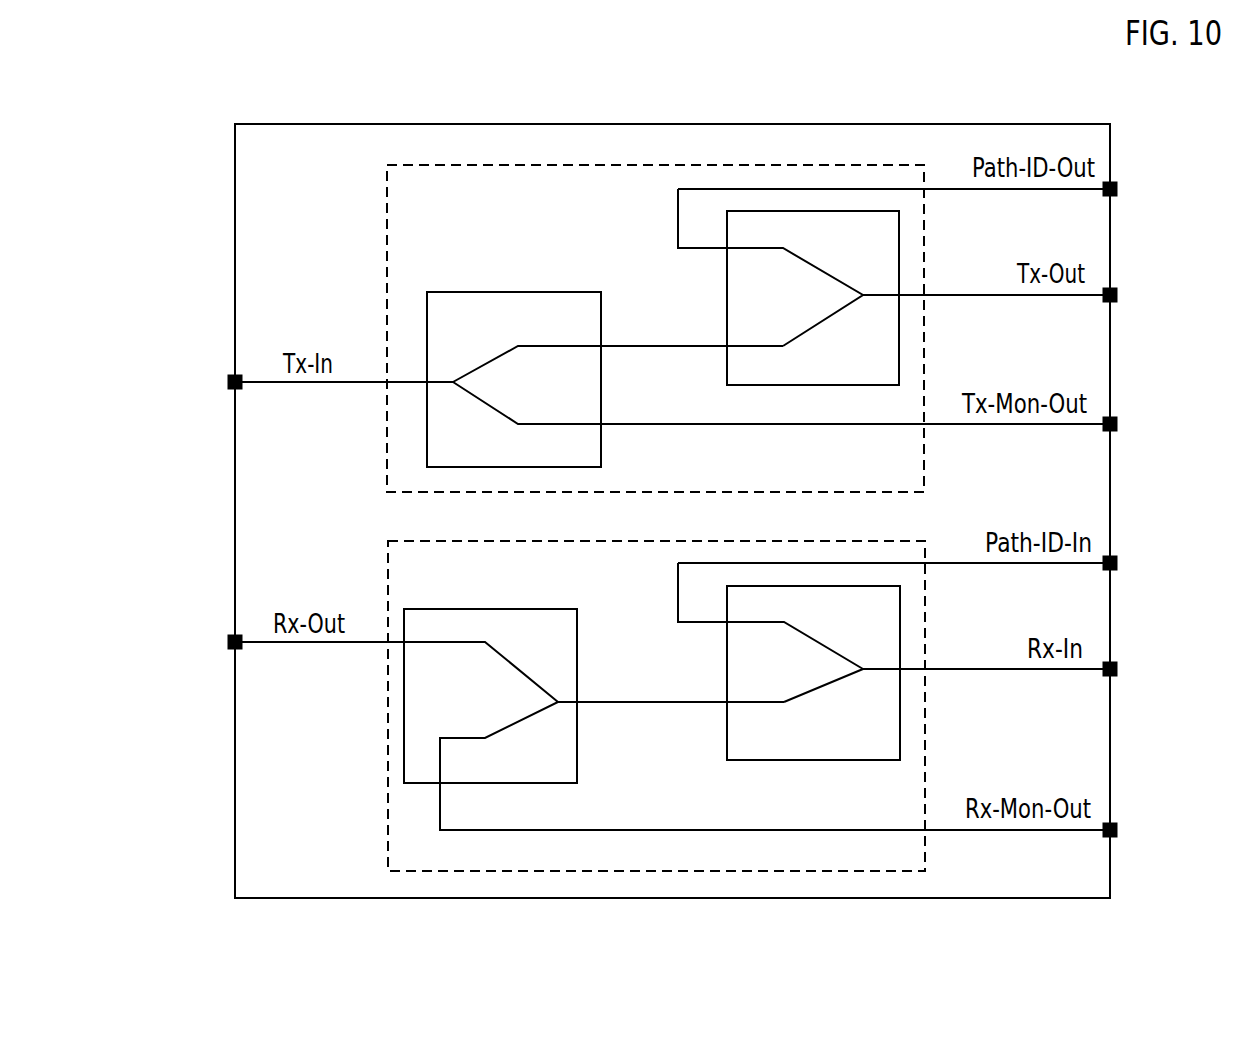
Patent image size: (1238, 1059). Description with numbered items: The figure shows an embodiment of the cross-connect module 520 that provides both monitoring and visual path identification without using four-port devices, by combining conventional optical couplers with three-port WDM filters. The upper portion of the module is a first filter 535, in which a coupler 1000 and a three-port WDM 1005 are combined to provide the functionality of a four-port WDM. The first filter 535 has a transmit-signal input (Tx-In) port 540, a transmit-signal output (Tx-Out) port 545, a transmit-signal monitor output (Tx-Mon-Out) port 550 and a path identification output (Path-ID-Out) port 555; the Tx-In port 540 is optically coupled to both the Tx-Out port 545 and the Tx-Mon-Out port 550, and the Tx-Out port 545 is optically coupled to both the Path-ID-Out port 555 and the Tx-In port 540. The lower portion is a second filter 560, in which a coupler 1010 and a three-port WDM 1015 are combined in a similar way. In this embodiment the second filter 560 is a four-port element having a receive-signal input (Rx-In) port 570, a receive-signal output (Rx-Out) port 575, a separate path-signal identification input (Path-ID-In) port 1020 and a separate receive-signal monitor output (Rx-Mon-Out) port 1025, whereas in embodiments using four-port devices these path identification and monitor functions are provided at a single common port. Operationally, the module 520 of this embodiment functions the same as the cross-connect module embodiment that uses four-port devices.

The first cross-connect module 520 is at (985, 124).
The first filter 535 is at (655, 328).
The second filter 560 is at (656, 706).
The coupler 1000 is at (768, 379).
The three-port WDM 1005 is at (894, 287).
The coupler 1010 is at (757, 719).
The three-port WDM 1015 is at (894, 661).
The transmit-signal input (Tx-In) port 540 is at (235, 382).
The transmit-signal output (Tx-Out) port 545 is at (1110, 295).
The transmit-signal monitor output (Tx-Mon-Out) port 550 is at (1110, 424).
The path identification output (Path-ID-Out) port 555 is at (1110, 189).
The receive-signal output (Rx-Out) port 575 is at (235, 642).
The receive-signal input (Rx-In) port 570 is at (1110, 669).
The path-signal identification input (Path-ID-In) port 1020 is at (1110, 563).
The receive-signal monitor output (Rx-Mon-Out) port 1025 is at (1110, 830).